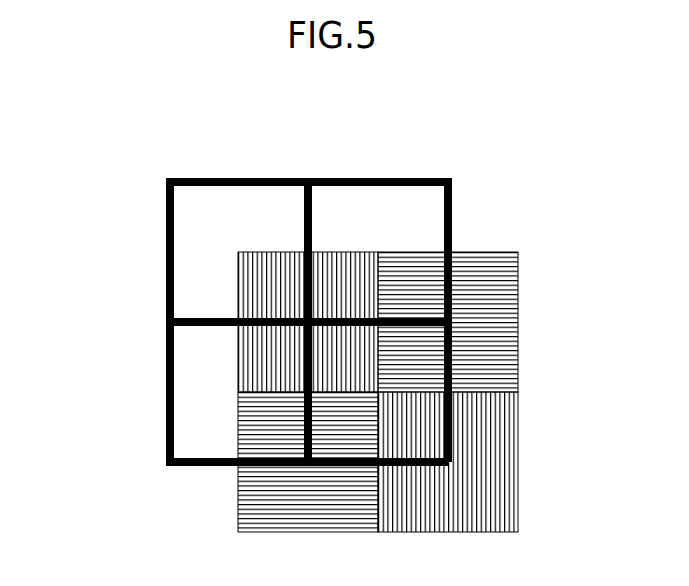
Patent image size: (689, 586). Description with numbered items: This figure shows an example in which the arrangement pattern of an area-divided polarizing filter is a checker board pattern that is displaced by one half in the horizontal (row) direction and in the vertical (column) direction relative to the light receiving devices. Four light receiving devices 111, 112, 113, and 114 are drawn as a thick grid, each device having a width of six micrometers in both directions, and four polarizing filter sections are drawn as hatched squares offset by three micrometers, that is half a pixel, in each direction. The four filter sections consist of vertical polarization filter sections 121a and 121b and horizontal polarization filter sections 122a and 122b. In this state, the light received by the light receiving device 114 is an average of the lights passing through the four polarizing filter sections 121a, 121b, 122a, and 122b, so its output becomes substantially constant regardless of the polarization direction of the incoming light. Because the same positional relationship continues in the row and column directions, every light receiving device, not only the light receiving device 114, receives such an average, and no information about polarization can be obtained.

The light receiving device 111 is at (251, 178).
The light receiving device 112 is at (405, 178).
The light receiving device 113 is at (167, 396).
The light receiving device 114 is at (452, 362).
The vertical polarization filter section 121a is at (262, 277).
The vertical polarization filter section 121b is at (490, 457).
The horizontal polarization filter section 122a is at (488, 316).
The horizontal polarization filter section 122b is at (265, 500).